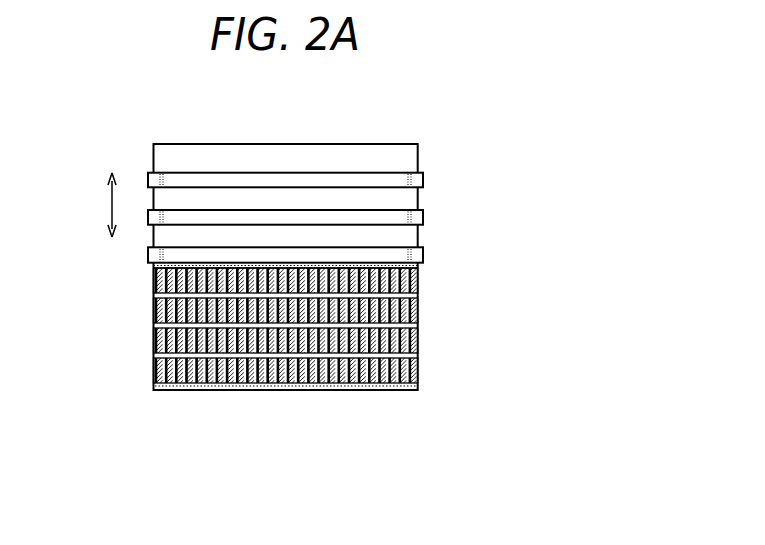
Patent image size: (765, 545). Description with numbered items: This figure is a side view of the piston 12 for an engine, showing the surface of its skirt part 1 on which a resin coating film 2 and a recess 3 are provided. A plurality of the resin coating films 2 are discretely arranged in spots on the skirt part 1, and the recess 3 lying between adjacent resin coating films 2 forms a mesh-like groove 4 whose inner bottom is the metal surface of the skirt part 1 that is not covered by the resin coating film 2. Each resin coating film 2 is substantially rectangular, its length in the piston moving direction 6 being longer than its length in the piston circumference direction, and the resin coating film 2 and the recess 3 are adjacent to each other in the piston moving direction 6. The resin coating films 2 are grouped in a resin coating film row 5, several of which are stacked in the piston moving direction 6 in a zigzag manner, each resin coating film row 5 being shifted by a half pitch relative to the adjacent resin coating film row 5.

The skirt part 1 is at (194, 389).
The resin coating film 2 is at (205, 270).
The recess 3 is at (336, 246).
The mesh-like groove 4 is at (308, 266).
The resin coating film row 5 is at (152, 282).
The piston moving direction 6 is at (108, 208).
The piston 12 is at (390, 391).